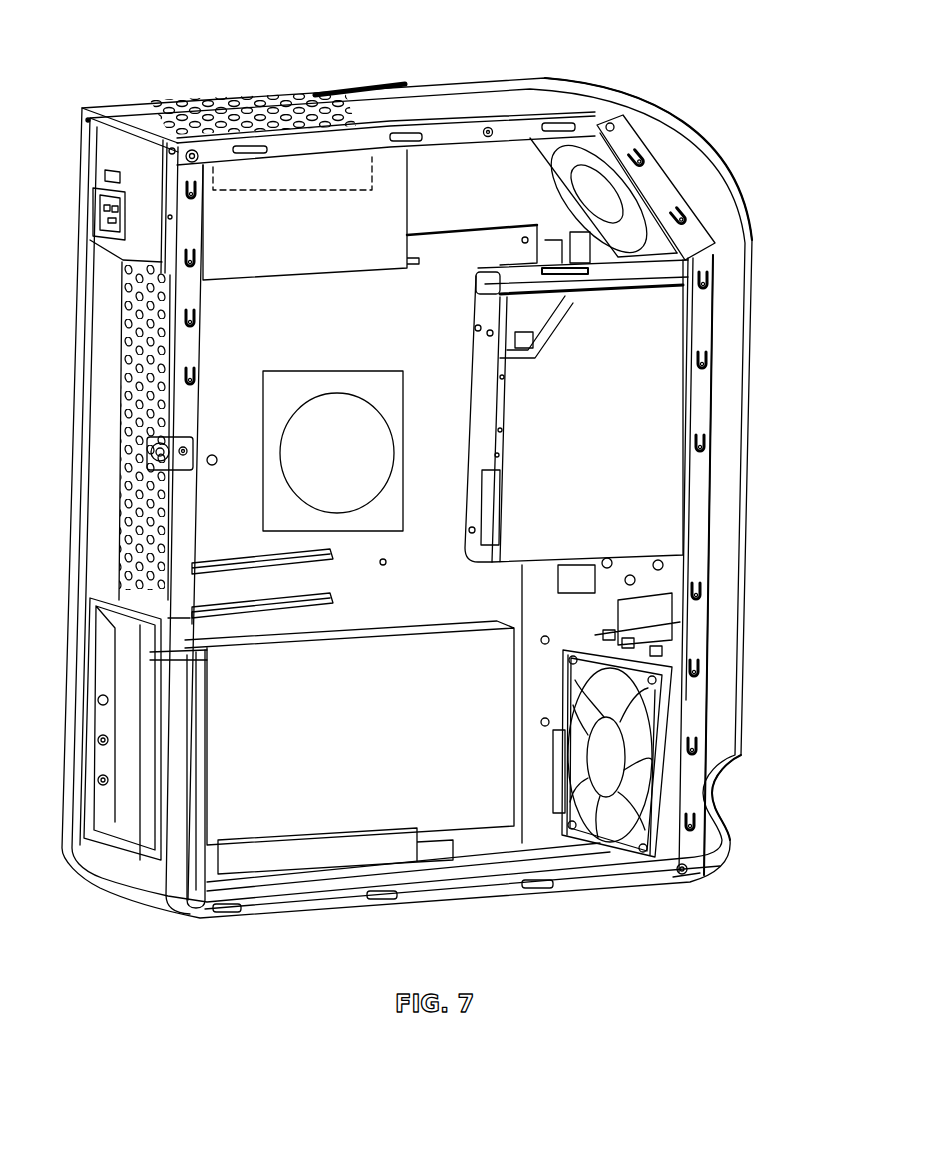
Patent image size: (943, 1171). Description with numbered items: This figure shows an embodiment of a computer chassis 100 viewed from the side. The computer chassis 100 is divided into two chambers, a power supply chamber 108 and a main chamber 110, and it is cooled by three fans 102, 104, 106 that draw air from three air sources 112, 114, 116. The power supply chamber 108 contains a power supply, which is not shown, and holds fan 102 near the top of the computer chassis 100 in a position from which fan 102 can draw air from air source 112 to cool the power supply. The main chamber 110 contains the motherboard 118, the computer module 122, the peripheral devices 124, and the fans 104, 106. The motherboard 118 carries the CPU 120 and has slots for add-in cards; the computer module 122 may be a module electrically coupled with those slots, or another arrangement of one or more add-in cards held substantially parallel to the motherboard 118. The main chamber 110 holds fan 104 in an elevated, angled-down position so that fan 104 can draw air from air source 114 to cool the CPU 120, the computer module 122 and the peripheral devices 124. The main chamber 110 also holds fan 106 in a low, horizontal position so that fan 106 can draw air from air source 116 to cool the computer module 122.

The computer chassis 100 is at (145, 30).
The fan 102 is at (205, 112).
The fan 104 is at (640, 210).
The fan 106 is at (614, 760).
The power supply chamber 108 is at (398, 188).
The main chamber 110 is at (470, 165).
The air source 112 is at (248, 175).
The air source 114 is at (688, 126).
The air source 116 is at (717, 797).
The motherboard 118 is at (376, 315).
The CPU 120 is at (333, 370).
The computer module 122 is at (384, 646).
The peripheral devices 124 is at (618, 444).